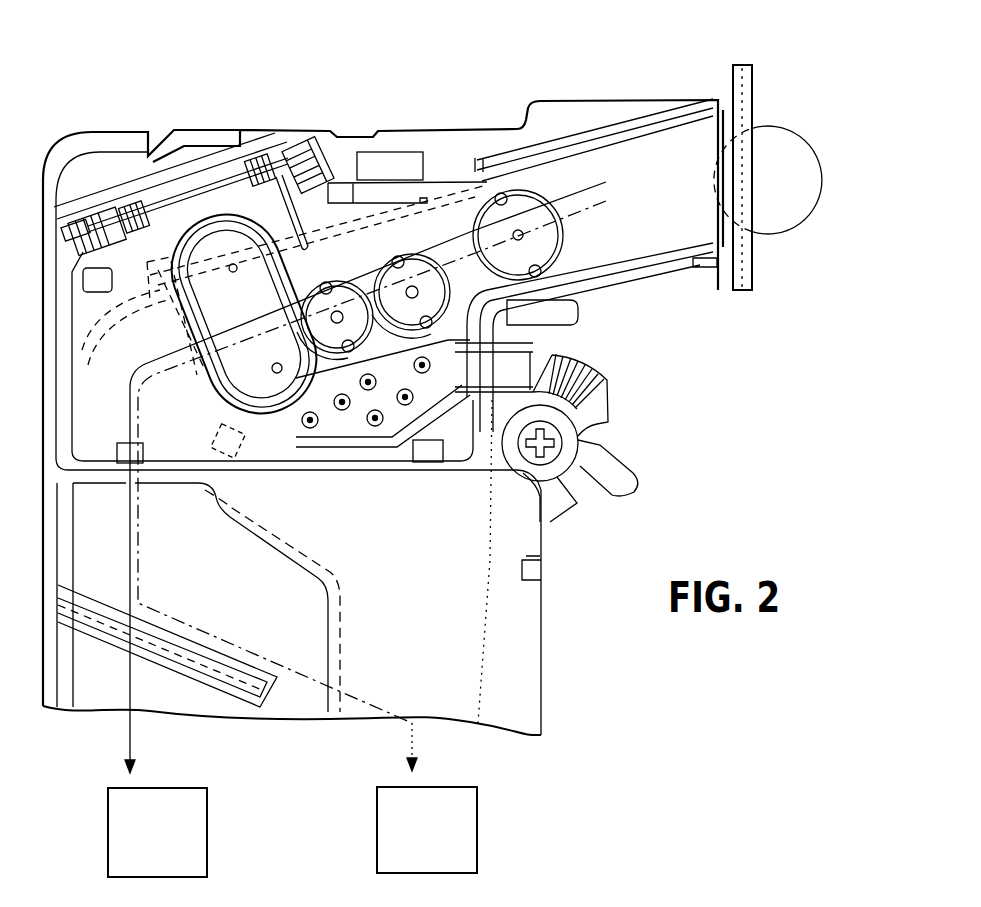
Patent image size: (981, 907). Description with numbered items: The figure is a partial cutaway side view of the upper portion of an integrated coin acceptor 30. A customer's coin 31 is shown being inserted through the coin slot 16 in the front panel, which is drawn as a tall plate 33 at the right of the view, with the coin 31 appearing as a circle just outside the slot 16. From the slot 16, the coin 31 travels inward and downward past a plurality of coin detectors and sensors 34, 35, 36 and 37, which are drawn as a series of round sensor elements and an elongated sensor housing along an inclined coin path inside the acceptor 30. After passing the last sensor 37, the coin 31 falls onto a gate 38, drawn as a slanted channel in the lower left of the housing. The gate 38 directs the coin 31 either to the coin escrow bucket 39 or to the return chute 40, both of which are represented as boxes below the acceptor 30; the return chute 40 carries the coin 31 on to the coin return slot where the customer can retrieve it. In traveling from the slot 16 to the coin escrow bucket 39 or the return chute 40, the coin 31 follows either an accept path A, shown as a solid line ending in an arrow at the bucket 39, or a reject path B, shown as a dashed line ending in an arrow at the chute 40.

The integrated coin acceptor 30 is at (502, 100).
The coin 31 is at (818, 160).
The plate 33 is at (745, 77).
The coin slot 16 is at (748, 118).
The coin detector and sensor 34 is at (535, 195).
The coin detector and sensor 35 is at (415, 250).
The coin detector and sensor 36 is at (330, 275).
The coin detector and sensor 37 is at (216, 230).
The gate 38 is at (98, 622).
The coin escrow bucket 39 is at (207, 826).
The return chute 40 is at (477, 826).